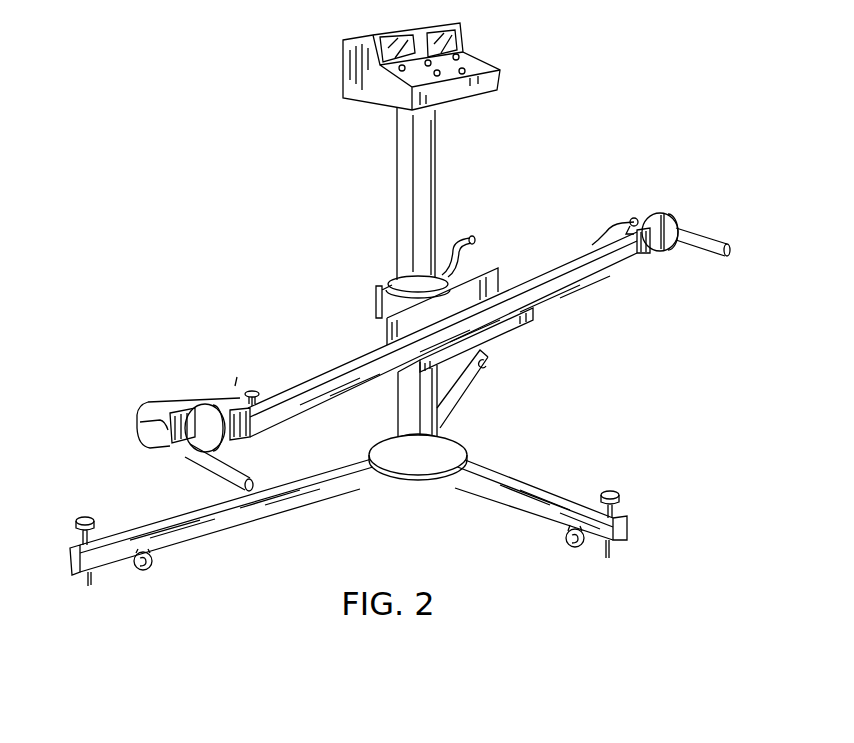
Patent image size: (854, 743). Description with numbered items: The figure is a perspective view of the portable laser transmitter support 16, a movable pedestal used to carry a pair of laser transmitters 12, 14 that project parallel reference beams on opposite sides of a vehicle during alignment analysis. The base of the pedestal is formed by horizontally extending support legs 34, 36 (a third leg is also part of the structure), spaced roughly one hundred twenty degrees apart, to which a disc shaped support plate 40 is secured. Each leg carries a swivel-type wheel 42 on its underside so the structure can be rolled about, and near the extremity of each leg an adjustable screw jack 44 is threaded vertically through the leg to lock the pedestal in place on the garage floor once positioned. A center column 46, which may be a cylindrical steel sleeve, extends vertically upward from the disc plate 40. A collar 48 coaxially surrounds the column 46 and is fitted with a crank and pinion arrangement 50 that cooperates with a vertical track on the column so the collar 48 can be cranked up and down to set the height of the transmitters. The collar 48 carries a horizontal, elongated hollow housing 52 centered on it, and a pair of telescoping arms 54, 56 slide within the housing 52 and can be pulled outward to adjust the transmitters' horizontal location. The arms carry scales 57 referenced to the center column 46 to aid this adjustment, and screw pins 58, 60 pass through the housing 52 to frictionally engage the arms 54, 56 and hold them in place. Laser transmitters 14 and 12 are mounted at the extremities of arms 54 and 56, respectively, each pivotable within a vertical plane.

The laser transmitter 12 is at (703, 233).
The laser transmitter 14 is at (215, 480).
The portable laser transmitter support 16 is at (490, 448).
The support leg 34 is at (517, 500).
The support leg 36 is at (222, 525).
The disc shaped support plate 40 is at (418, 465).
The swivel-type wheel 42 is at (147, 578).
The adjustable screw jack 44 is at (75, 520).
The center column 46 is at (413, 172).
The collar 48 is at (372, 293).
The crank and pinion arrangement 50 is at (453, 243).
The horizontal elongated hollow housing 52 is at (557, 262).
The telescoping arm 54 is at (240, 430).
The telescoping arm 56 is at (647, 252).
The scale 57 is at (228, 408).
The screw pin 58 is at (254, 391).
The screw pin 60 is at (627, 220).